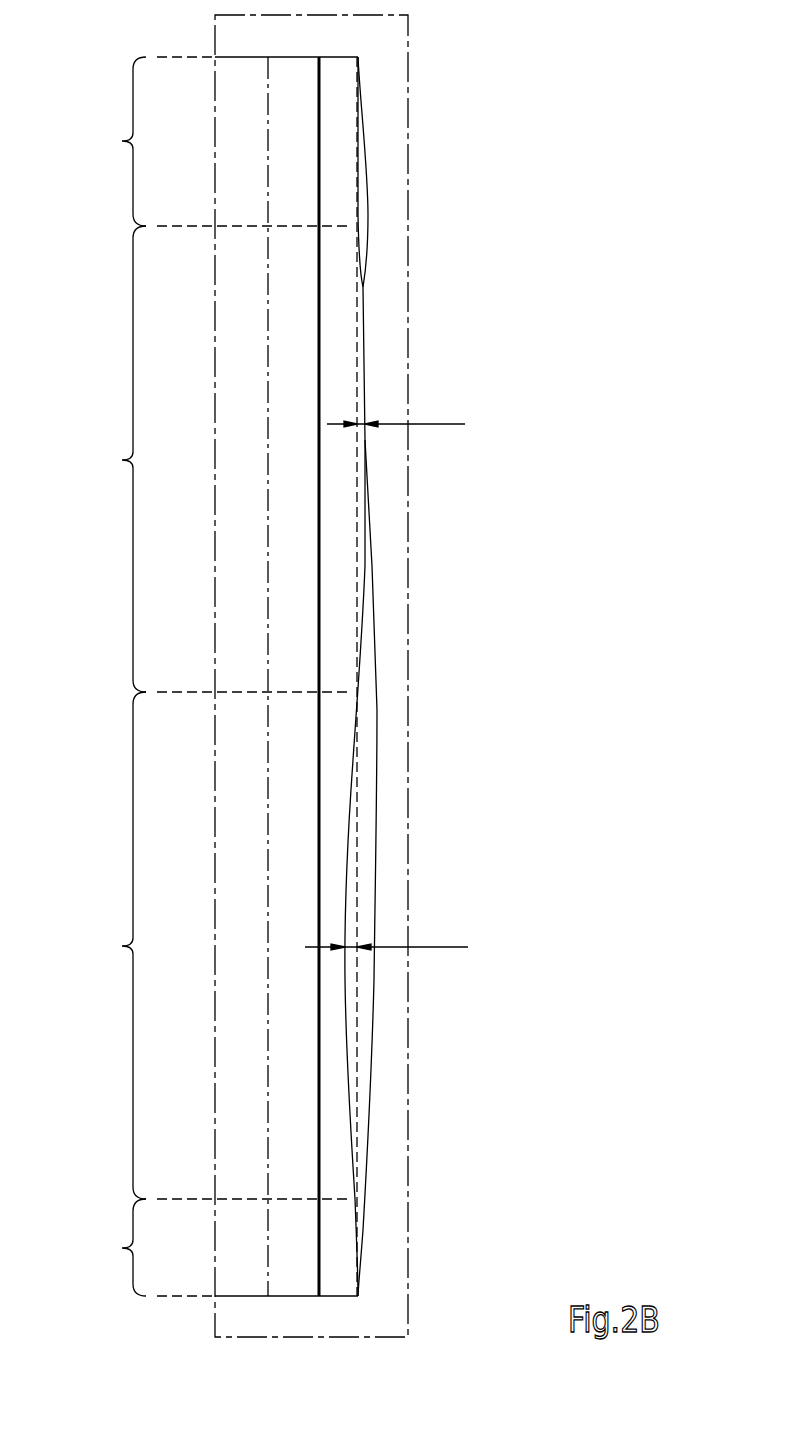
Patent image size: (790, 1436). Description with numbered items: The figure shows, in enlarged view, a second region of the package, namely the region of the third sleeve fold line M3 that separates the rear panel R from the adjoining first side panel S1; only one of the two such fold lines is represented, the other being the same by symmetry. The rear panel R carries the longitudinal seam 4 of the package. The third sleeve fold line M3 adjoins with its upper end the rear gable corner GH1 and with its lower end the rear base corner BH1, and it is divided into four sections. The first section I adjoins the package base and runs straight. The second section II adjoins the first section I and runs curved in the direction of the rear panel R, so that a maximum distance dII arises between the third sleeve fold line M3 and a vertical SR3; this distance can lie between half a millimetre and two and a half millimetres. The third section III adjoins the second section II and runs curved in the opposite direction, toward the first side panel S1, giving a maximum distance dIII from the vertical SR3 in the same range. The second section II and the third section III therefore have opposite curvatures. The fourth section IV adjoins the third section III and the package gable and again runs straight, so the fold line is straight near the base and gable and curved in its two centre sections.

The longitudinal seam 4 is at (293, 350).
The rear panel R is at (253, 591).
The vertical SR3 is at (357, 870).
The third sleeve fold line M3 is at (364, 566).
The first side panel S1 is at (367, 790).
The rear gable corner GH1 is at (358, 57).
The rear base corner BH1 is at (358, 1296).
The maximum distance dIII is at (455, 415).
The maximum distance dII is at (453, 940).
The fourth section IV is at (116, 131).
The third section III is at (113, 472).
The second section II is at (112, 957).
The first section I is at (112, 1258).